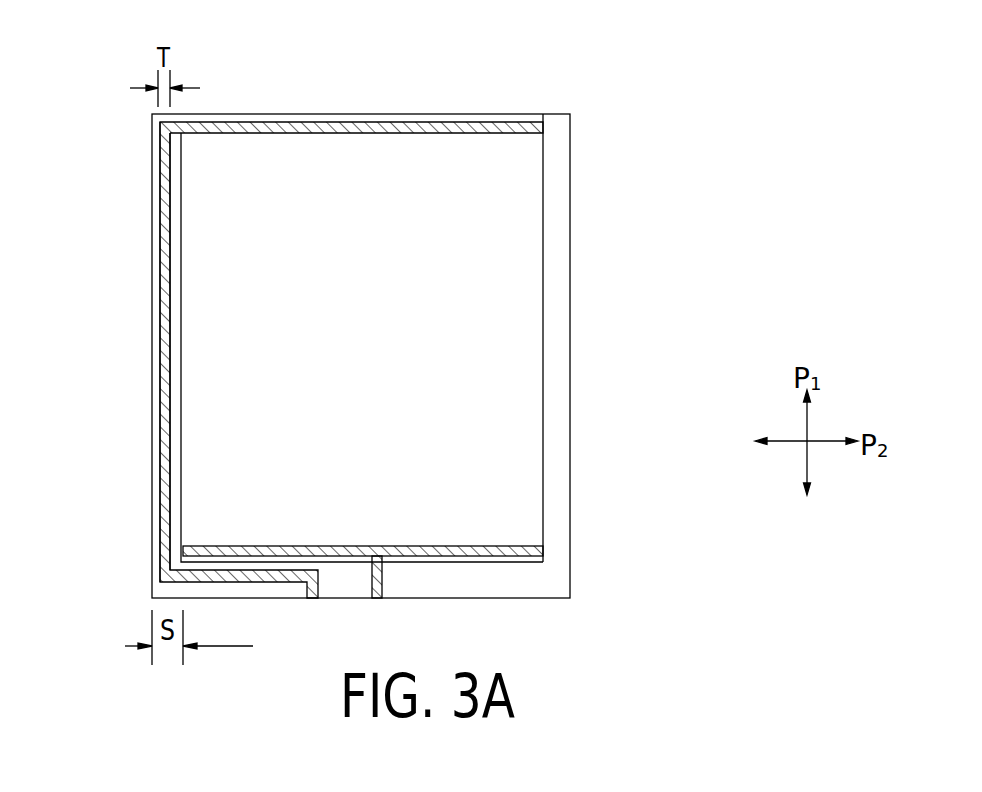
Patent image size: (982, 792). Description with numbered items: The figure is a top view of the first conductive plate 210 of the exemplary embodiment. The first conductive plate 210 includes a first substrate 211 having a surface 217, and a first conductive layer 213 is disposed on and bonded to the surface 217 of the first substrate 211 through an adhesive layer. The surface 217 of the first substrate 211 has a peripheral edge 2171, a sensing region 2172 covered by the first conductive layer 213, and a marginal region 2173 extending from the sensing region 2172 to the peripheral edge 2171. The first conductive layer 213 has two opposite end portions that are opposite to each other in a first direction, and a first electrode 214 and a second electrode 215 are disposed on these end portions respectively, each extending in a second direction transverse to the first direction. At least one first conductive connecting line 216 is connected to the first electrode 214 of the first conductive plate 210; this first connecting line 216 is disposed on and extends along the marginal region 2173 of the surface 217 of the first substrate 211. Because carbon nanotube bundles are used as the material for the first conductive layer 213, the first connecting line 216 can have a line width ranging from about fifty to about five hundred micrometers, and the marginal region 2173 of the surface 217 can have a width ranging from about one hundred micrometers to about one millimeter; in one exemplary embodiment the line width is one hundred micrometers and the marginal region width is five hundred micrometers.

The first conductive plate 210 is at (425, 337).
The first substrate 211 is at (570, 141).
The first conductive layer 213 is at (542, 305).
The first electrode 214 is at (382, 121).
The second electrode 215 is at (543, 548).
The first conductive connecting line 216 is at (166, 266).
The surface 217 is at (350, 360).
The peripheral edge 2171 is at (176, 360).
The sensing region 2172 is at (487, 432).
The marginal region 2173 is at (158, 344).